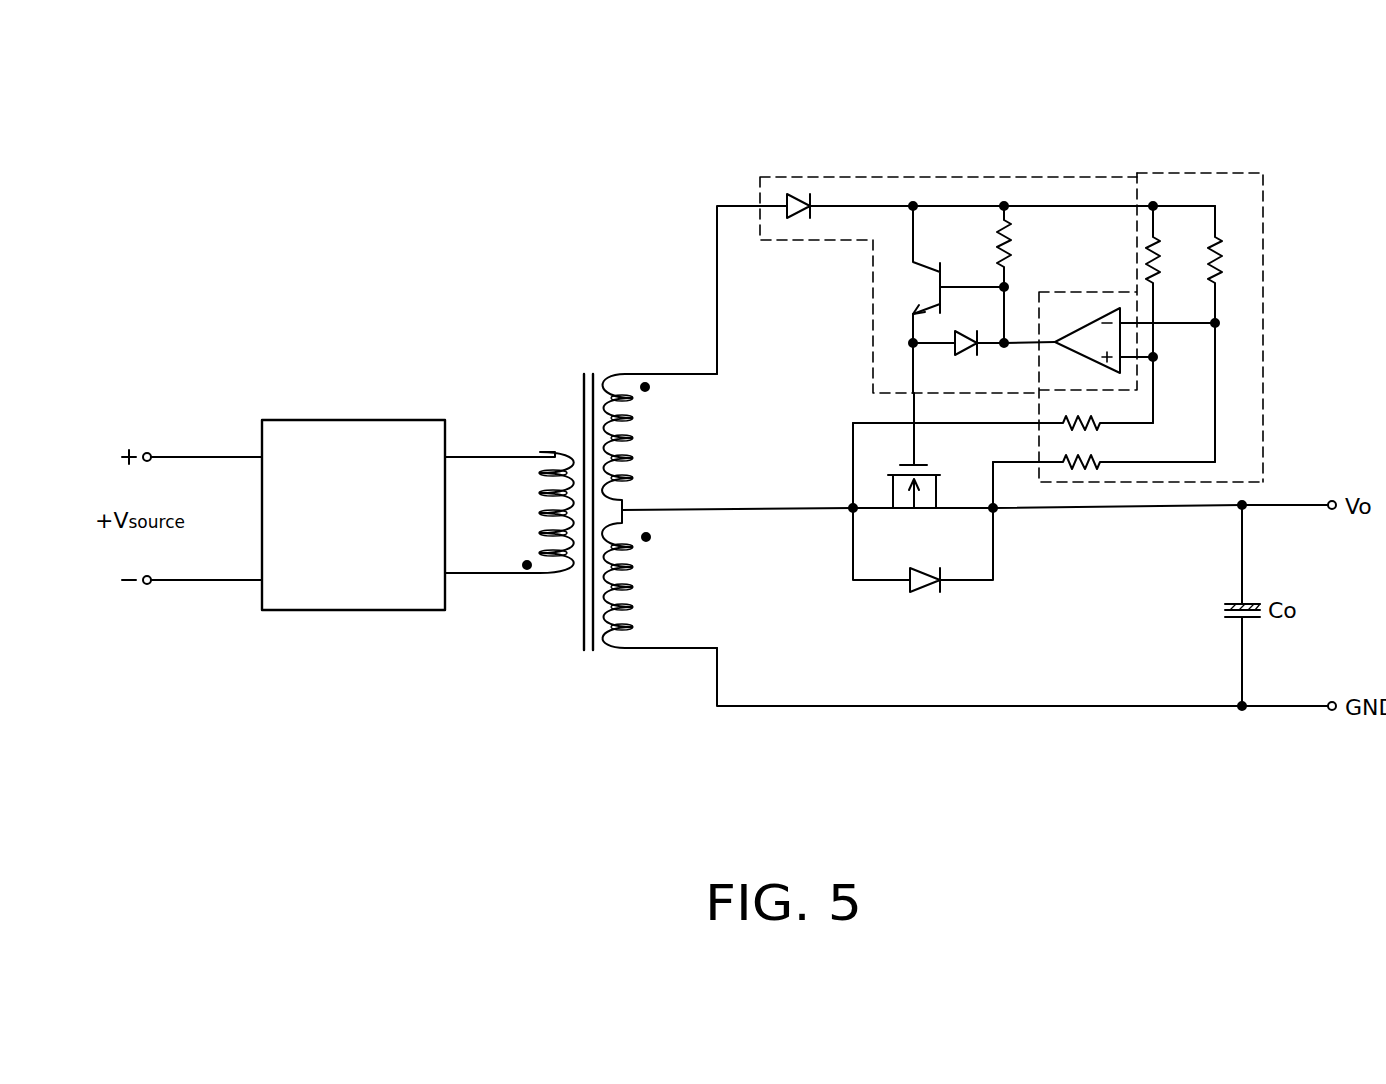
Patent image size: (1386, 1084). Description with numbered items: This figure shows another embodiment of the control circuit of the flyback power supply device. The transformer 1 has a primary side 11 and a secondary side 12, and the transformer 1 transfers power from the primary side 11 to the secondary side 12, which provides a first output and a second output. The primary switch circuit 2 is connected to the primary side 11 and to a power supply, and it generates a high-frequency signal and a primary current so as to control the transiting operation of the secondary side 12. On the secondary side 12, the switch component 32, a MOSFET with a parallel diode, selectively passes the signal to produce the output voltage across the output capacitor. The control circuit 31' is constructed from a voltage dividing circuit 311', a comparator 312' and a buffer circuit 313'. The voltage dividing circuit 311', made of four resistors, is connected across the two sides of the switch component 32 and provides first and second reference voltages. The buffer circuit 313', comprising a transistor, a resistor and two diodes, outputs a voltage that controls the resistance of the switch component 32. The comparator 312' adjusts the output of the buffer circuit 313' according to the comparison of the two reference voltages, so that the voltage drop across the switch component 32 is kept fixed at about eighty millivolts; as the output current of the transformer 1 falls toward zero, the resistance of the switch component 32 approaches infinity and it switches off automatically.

The transformer 1 is at (586, 356).
The primary switch circuit 2 is at (356, 430).
The primary side 11 is at (550, 451).
The secondary side 12 is at (618, 373).
The control circuit 31' is at (1073, 283).
The voltage dividing circuit 311' is at (1255, 327).
The comparator 312' is at (1058, 298).
The buffer circuit 313' is at (987, 241).
The switch component 32 is at (886, 488).